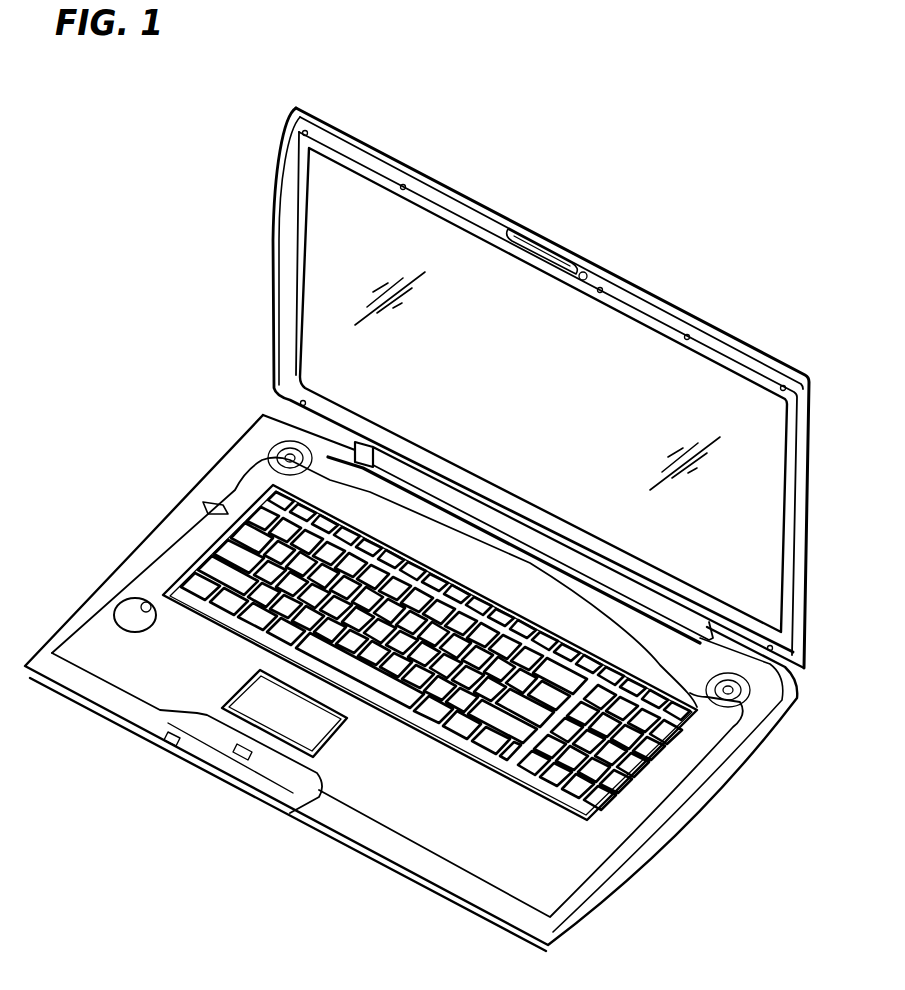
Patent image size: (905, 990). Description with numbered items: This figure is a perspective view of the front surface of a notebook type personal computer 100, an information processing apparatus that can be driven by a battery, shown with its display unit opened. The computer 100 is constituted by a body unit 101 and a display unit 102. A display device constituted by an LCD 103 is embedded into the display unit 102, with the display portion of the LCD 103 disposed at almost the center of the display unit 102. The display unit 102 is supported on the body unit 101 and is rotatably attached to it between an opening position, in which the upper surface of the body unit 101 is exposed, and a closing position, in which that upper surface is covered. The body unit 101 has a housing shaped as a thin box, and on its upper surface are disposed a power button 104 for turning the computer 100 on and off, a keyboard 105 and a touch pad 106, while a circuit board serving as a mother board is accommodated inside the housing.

The notebook type personal computer 100 is at (178, 228).
The body unit 101 is at (141, 546).
The display unit 102 is at (274, 259).
The LCD 103 is at (562, 315).
The power button 104 is at (208, 498).
The keyboard 105 is at (249, 512).
The touch pad 106 is at (293, 727).